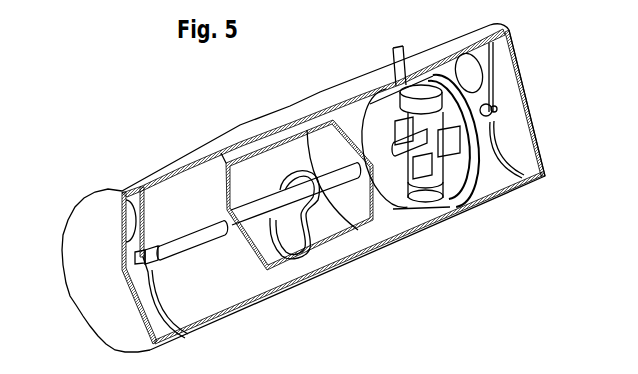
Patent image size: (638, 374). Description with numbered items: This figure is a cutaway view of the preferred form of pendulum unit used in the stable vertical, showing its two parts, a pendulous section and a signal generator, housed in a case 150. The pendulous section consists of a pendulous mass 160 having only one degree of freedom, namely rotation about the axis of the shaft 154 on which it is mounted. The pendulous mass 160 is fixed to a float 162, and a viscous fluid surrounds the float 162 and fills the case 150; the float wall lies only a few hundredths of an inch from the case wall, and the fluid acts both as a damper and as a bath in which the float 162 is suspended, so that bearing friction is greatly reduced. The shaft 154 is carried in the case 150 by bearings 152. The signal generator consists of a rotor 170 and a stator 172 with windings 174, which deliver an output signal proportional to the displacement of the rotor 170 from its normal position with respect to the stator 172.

The case 150 is at (65, 239).
The bearing 152 is at (132, 268).
The shaft 154 is at (196, 243).
The pendulous mass 160 is at (297, 242).
The float 162 is at (283, 276).
The rotor 170 is at (412, 162).
The stator 172 is at (471, 184).
The windings 174 is at (402, 48).